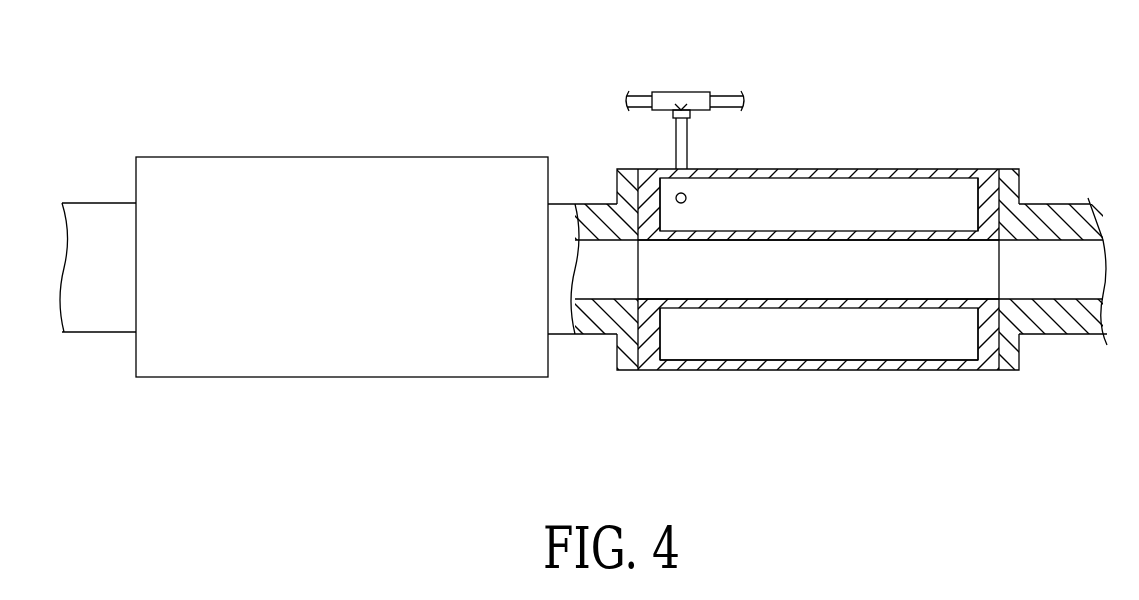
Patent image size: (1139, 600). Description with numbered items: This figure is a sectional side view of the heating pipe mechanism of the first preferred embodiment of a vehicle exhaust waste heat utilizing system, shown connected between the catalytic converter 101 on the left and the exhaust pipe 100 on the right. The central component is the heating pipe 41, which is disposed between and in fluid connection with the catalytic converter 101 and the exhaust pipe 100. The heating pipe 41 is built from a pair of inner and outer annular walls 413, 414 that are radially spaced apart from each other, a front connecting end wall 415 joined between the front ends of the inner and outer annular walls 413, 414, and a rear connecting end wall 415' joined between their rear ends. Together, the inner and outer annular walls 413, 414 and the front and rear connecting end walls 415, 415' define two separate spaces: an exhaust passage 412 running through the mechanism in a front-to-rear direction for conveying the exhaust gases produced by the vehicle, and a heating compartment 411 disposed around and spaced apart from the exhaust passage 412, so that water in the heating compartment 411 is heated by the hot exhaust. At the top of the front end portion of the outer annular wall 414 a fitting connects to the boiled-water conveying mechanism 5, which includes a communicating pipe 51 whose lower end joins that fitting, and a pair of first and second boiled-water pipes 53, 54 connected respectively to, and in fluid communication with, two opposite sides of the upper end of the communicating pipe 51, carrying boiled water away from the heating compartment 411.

The catalytic converter 101 is at (350, 328).
The exhaust pipe 100 is at (1060, 315).
The heating pipe 41 is at (880, 172).
The heating compartment 411 is at (815, 200).
The exhaust passage 412 is at (927, 258).
The inner annular wall 413 is at (815, 305).
The outer annular wall 414 is at (773, 367).
The front connecting end wall 415 is at (788, 312).
The rear connecting end wall 415' is at (756, 309).
The boiled-water conveying mechanism 5 is at (680, 85).
The communicating pipe 51 is at (683, 148).
The first boiled-water pipe 53 is at (641, 100).
The second boiled-water pipe 54 is at (728, 100).